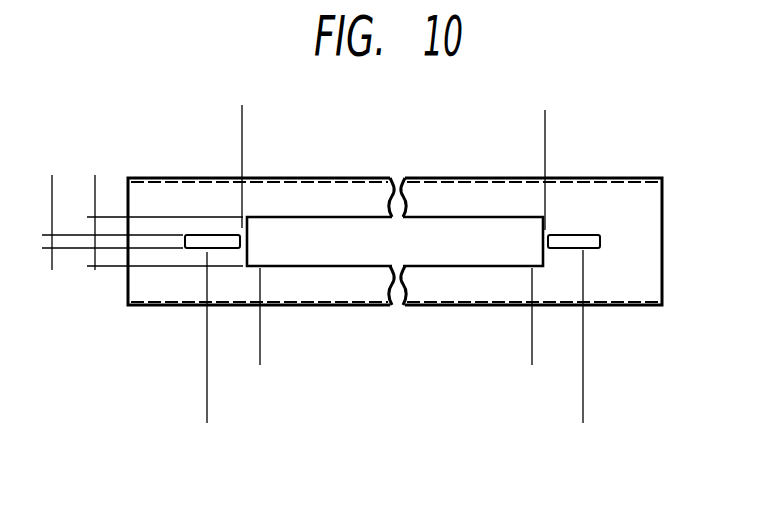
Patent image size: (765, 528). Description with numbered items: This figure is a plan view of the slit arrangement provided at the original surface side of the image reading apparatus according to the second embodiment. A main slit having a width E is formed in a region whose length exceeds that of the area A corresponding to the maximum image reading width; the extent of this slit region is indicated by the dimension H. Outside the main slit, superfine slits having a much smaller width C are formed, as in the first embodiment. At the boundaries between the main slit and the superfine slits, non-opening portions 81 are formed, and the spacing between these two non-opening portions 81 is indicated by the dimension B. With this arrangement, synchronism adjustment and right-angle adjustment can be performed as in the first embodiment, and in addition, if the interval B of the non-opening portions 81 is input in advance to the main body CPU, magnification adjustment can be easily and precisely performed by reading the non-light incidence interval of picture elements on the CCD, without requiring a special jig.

The non-opening portions 81 is at (242, 250).
The area corresponding to the maximum image reading width A is at (532, 357).
The dimension B (slot spacing) B is at (583, 416).
The width of the superfine slits C is at (52, 261).
The width of the slit E is at (95, 266).
The dimension H (slot length) H is at (545, 113).